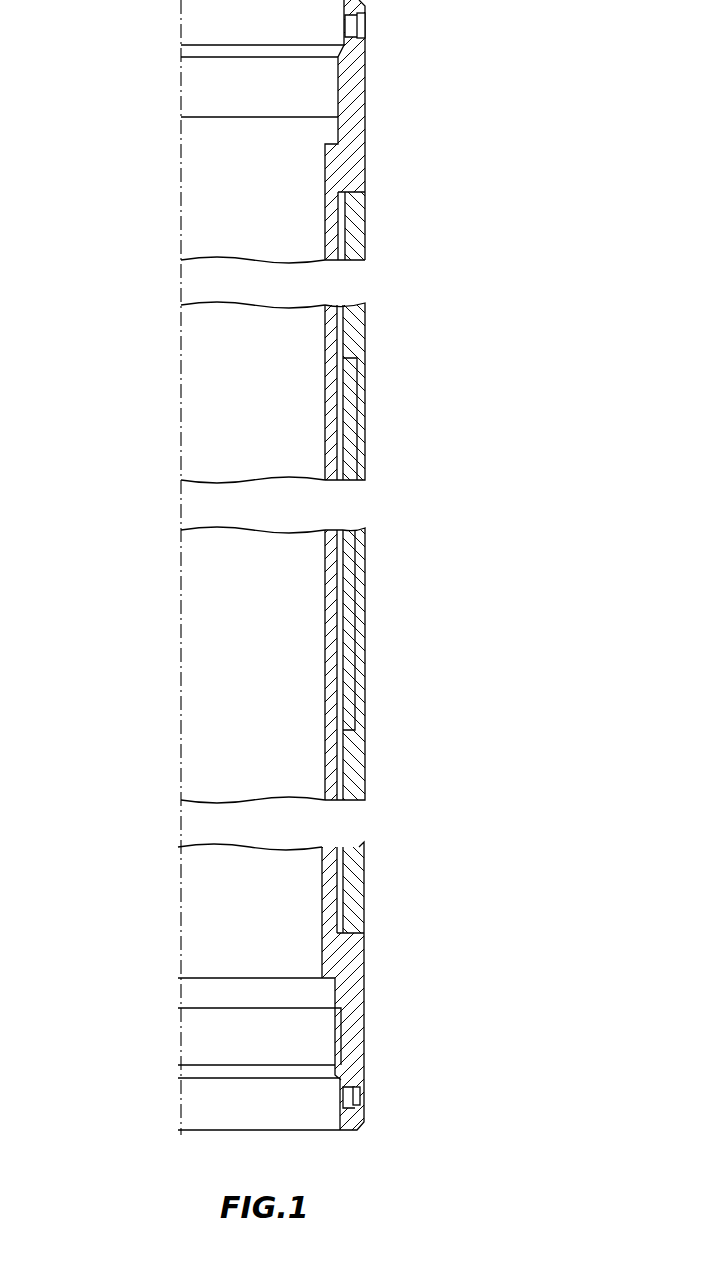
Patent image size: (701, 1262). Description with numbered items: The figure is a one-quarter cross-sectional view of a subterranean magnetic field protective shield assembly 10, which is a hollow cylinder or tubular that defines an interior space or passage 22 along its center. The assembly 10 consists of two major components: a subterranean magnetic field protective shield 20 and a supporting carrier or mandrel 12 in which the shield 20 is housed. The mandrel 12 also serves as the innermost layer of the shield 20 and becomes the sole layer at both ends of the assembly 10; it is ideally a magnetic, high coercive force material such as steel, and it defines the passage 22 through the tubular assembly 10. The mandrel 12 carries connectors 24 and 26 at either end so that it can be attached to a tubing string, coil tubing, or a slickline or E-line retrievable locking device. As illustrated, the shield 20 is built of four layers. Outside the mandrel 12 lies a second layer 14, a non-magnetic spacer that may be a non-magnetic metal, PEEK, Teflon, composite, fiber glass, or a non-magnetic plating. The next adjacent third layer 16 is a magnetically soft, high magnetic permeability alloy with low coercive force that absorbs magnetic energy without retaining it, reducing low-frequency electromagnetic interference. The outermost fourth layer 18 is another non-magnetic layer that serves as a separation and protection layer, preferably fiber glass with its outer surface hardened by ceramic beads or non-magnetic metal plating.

The subterranean magnetic field protective shield assembly 10 is at (555, 76).
The mandrel 12 is at (367, 168).
The second layer 14 is at (345, 731).
The third layer 16 is at (356, 624).
The fourth layer 18 is at (366, 660).
The subterranean magnetic field protective shield 20 is at (370, 434).
The passage 22 is at (223, 427).
The connector 24 is at (358, 110).
The connector 26 is at (355, 988).